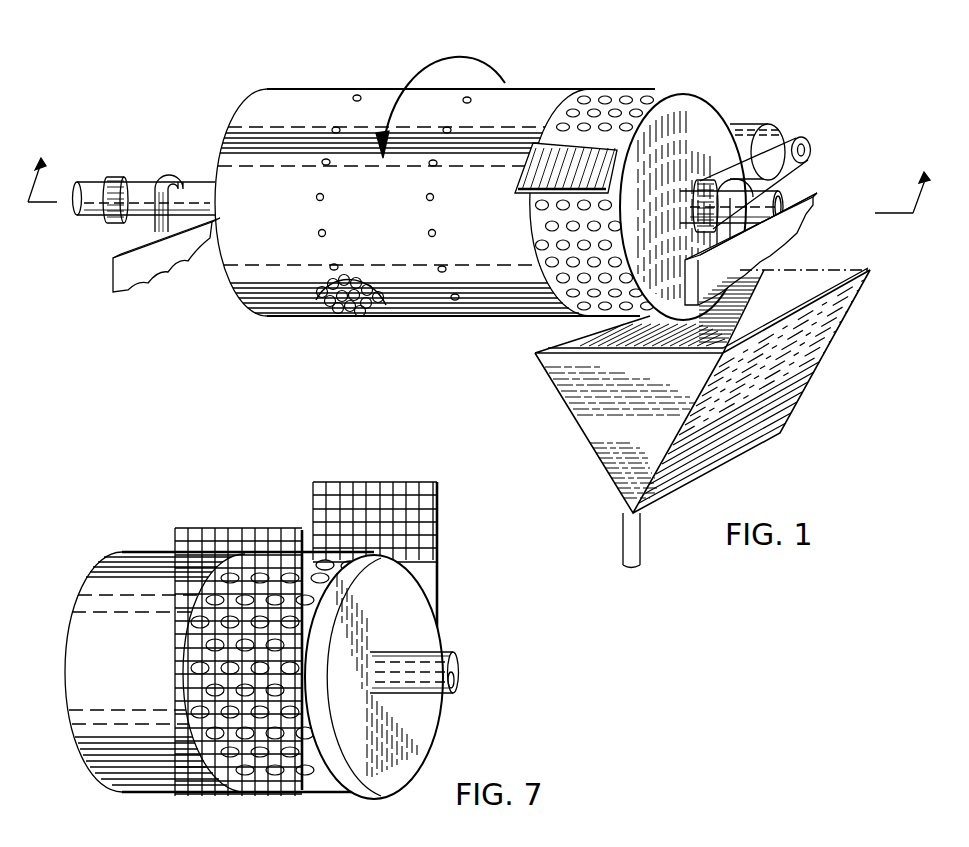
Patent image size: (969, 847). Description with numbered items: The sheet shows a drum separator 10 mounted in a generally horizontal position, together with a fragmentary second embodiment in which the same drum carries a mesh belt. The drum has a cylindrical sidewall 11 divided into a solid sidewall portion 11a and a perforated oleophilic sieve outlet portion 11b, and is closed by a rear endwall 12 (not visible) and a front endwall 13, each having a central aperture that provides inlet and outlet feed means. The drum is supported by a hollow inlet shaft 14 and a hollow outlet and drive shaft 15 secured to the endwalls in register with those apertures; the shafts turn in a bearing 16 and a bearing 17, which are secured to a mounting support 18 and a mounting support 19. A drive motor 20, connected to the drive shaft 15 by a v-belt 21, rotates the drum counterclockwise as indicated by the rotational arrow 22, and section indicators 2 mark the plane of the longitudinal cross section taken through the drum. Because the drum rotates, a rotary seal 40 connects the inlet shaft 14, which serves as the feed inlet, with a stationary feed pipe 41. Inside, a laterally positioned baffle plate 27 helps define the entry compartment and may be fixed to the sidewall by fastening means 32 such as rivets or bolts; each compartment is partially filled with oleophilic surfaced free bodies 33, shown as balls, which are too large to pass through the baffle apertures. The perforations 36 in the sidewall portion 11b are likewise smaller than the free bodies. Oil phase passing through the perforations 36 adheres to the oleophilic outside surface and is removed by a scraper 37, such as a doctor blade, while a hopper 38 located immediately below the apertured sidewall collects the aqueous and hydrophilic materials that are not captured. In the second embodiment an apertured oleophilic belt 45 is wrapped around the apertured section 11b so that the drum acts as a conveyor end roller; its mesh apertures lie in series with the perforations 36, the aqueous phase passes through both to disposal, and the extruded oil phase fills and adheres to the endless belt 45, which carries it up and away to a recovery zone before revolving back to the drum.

In FIG. 1, the section line 2- 2 is at (481, 177).
In FIG. 1, the drum separator 10 is at (374, 76).
In FIG. 7, the drum separator 10 is at (143, 538).
In FIG. 1, the cylindrical sidewall 11 is at (297, 92).
In FIG. 1, the solid sidewall portion 11a is at (223, 253).
In FIG. 7, the solid sidewall portion 11a is at (85, 742).
In FIG. 1, the perforated oleophilic sieve outlet portion 11b is at (643, 93).
In FIG. 7, the perforated oleophilic sieve outlet portion 11b is at (312, 622).
In FIG. 1, the rear endwall 12 is at (237, 107).
In FIG. 1, the front endwall 13 is at (707, 113).
In FIG. 7, the front endwall 13 is at (430, 712).
In FIG. 1, the hollow inlet shaft 14 is at (147, 181).
In FIG. 1, the hollow outlet and drive shaft 15 is at (772, 210).
In FIG. 7, the hollow outlet and drive shaft 15 is at (447, 648).
In FIG. 1, the bearing 16 is at (173, 172).
In FIG. 1, the bearing 17 is at (737, 235).
In FIG. 1, the mounting support 18 is at (113, 276).
In FIG. 1, the mounting support 19 is at (816, 200).
In FIG. 1, the drive motor 20 is at (773, 130).
In FIG. 1, the v-belt 21 is at (800, 180).
In FIG. 1, the rotational arrow 22 is at (470, 56).
In FIG. 1, the baffle plate 27 is at (333, 283).
In FIG. 1, the fastening means 32 is at (430, 232).
In FIG. 1, the oleophilic surfaced free bodies 33 is at (345, 308).
In FIG. 1, the perforations 36 is at (596, 92).
In FIG. 7, the perforations 36 is at (345, 566).
In FIG. 1, the scraper 37 is at (513, 173).
In FIG. 1, the hopper 38 is at (575, 407).
In FIG. 1, the rotary seal 40 is at (114, 177).
In FIG. 1, the stationary feed pipe 41 is at (93, 185).
In FIG. 7, the apertured oleophilic belt 45 is at (312, 497).